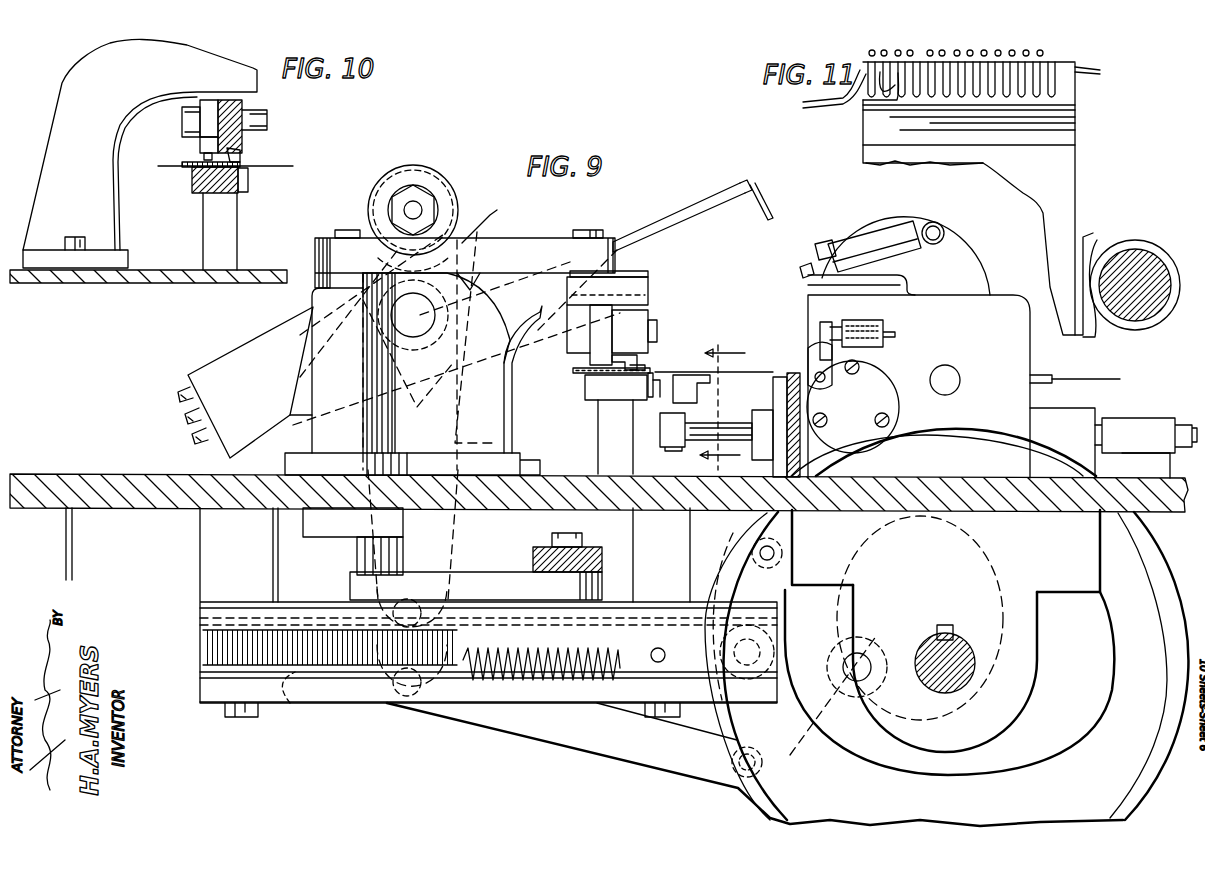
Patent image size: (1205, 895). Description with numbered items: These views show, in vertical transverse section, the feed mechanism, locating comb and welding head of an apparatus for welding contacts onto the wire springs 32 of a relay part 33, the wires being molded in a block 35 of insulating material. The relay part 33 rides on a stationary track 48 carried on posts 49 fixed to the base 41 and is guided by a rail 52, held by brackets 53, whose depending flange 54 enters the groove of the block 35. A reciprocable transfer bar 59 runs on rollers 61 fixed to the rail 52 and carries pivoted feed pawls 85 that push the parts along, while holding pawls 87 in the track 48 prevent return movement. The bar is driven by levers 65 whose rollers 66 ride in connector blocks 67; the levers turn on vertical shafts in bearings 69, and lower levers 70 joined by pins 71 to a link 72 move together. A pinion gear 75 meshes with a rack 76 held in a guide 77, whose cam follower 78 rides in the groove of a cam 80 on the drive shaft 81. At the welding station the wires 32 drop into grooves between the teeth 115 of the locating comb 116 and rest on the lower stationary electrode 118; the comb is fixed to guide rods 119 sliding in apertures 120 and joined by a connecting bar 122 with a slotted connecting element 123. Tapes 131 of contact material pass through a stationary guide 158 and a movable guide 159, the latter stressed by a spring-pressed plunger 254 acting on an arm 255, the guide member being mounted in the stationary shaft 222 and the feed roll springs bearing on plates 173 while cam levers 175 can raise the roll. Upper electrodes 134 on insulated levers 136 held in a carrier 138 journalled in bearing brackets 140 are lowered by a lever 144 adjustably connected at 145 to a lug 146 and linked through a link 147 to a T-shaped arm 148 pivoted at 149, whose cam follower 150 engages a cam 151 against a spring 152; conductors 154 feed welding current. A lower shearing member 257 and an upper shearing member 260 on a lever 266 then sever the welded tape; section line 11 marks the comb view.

In FIG. 9, the section line 11— 11 is at (724, 404).
In FIG. 11, the wire springs 32 is at (982, 48).
In FIG. 9, the wire springs 32 is at (659, 393).
In FIG. 10, the relay part 33 is at (164, 171).
In FIG. 9, the relay part 33 is at (562, 377).
In FIG. 10, the block of insulating material 35 is at (182, 175).
In FIG. 9, the block of insulating material 35 is at (582, 380).
In FIG. 10, the base 41 is at (178, 272).
In FIG. 9, the base 41 is at (87, 474).
In FIG. 10, the track 48 is at (250, 198).
In FIG. 9, the track 48 is at (606, 408).
In FIG. 10, the posts 49 is at (237, 240).
In FIG. 9, the posts 49 is at (598, 460).
In FIG. 10, the rail 52 is at (245, 110).
In FIG. 9, the rail 52 is at (640, 320).
In FIG. 10, the brackets 53 is at (82, 100).
In FIG. 9, the brackets 53 is at (500, 430).
In FIG. 10, the depending flange 54 is at (245, 160).
In FIG. 9, the depending flange 54 is at (642, 347).
In FIG. 10, the transfer bar 59 is at (200, 147).
In FIG. 9, the transfer bar 59 is at (580, 346).
In FIG. 10, the rollers 61 is at (200, 115).
In FIG. 9, the rollers 61 is at (635, 293).
In FIG. 9, the levers 65 is at (548, 240).
In FIG. 9, the rollers 66 is at (628, 278).
In FIG. 9, the connector blocks 67 is at (570, 322).
In FIG. 9, the bearings 69 is at (310, 300).
In FIG. 9, the levers 70 is at (463, 580).
In FIG. 9, the pins 71 is at (565, 536).
In FIG. 9, the link 72 is at (535, 557).
In FIG. 9, the pinion gear 75 is at (300, 703).
In FIG. 9, the rack 76 is at (200, 648).
In FIG. 9, the guide 77 is at (360, 703).
In FIG. 9, the cam follower 78 is at (662, 646).
In FIG. 9, the cam 80 is at (1145, 788).
In FIG. 9, the drive shaft 81 is at (950, 650).
In FIG. 10, the feed pawls 85 is at (205, 156).
In FIG. 10, the holding pawls 87 is at (248, 178).
In FIG. 9, the holding pawls 87 is at (645, 370).
In FIG. 11, the teeth 115 is at (947, 89).
In FIG. 11, the locating comb 116 is at (1068, 183).
In FIG. 9, the locating comb 116 is at (690, 398).
In FIG. 9, the lower stationary electrode 118 is at (762, 385).
In FIG. 11, the guide rods 119 is at (1139, 243).
In FIG. 9, the apertures 120 is at (1010, 295).
In FIG. 9, the connecting bar 122 is at (1128, 428).
In FIG. 9, the slotted connecting element 123 is at (1085, 465).
In FIG. 9, the tapes 131 is at (1103, 380).
In FIG. 9, the upper electrodes 134 is at (766, 212).
In FIG. 9, the levers 136 is at (672, 215).
In FIG. 9, the carrier 138 is at (490, 240).
In FIG. 9, the bearing brackets 140 is at (300, 413).
In FIG. 9, the lever 144 is at (445, 530).
In FIG. 9, the adjustable connection 145 is at (413, 205).
In FIG. 9, the lug 146 is at (462, 243).
In FIG. 9, the link 147 is at (540, 745).
In FIG. 9, the T-shaped arm 148 is at (800, 760).
In FIG. 9, the pivot 149 is at (780, 545).
In FIG. 9, the cam follower 150 is at (898, 620).
In FIG. 9, the cam 151 is at (1000, 577).
In FIG. 9, the spring 152 is at (562, 660).
In FIG. 9, the conductors 154 is at (178, 398).
In FIG. 9, the stationary tape guide 158 is at (1040, 383).
In FIG. 9, the movable tape guide 159 is at (802, 375).
In FIG. 9, the plates 173 is at (895, 285).
In FIG. 9, the cam levers 175 is at (880, 242).
In FIG. 9, the stationary shaft 222 is at (946, 366).
In FIG. 9, the spring-pressed plunger 254 is at (845, 322).
In FIG. 9, the arm 255 is at (812, 335).
In FIG. 9, the lower shearing member 257 is at (770, 384).
In FIG. 9, the upper shearing member 260 is at (793, 283).
In FIG. 9, the lever 266 is at (965, 265).